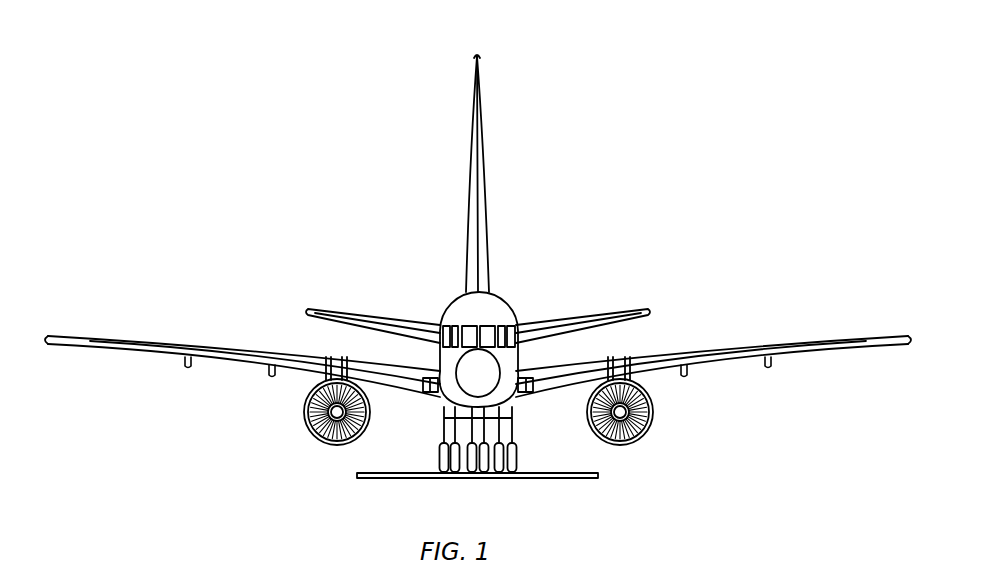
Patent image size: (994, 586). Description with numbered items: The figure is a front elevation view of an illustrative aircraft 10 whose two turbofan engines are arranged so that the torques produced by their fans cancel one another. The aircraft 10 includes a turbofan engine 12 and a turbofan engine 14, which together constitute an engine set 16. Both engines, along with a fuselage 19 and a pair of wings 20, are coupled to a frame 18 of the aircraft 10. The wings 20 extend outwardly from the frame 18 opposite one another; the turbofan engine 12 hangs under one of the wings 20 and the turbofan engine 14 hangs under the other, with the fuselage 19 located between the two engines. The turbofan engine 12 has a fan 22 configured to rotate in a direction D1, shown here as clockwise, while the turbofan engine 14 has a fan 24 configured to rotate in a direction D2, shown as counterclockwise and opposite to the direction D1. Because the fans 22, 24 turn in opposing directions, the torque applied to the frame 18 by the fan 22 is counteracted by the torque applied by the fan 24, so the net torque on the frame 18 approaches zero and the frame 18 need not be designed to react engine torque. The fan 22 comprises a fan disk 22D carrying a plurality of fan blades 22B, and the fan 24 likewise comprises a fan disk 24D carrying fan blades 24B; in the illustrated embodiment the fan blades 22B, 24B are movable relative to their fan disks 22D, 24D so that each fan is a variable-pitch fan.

The aircraft 10 is at (757, 93).
The turbofan engine 12 is at (295, 437).
The turbofan engine 14 is at (662, 440).
The engine set 16 is at (200, 480).
The frame 18 is at (568, 320).
The fuselage 19 is at (500, 292).
The pair of wings 20 is at (275, 343).
The fan 22 is at (337, 447).
The fan blades 22B is at (301, 413).
The fan disk 22D is at (358, 395).
The fan 24 is at (620, 447).
The fan blades 24B is at (656, 416).
The fan disk 24D is at (640, 398).
The direction D1 is at (365, 418).
The direction D2 is at (655, 406).